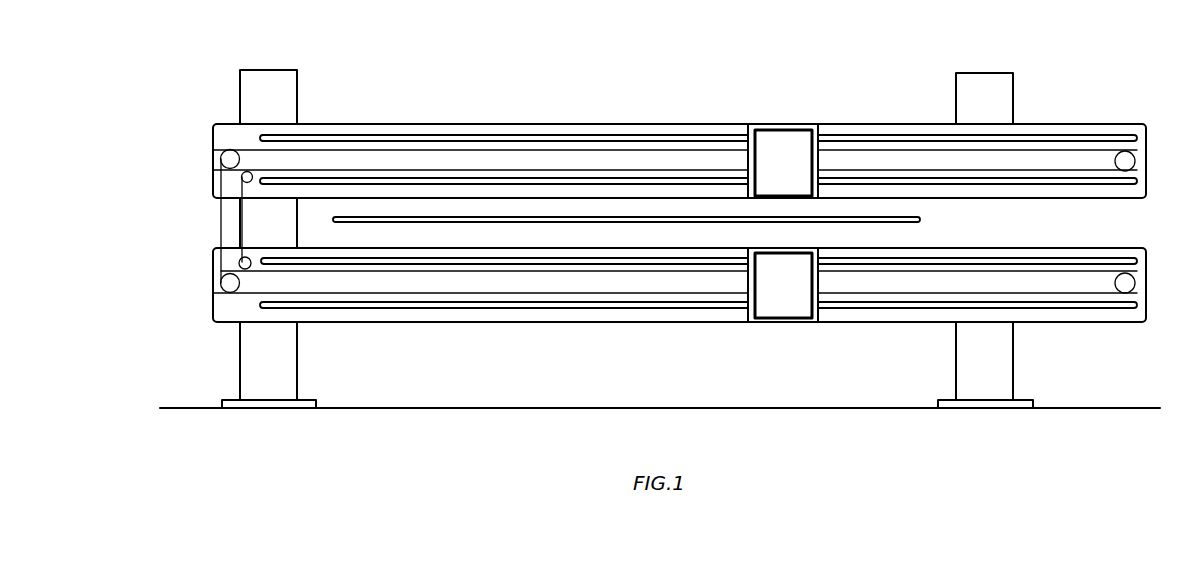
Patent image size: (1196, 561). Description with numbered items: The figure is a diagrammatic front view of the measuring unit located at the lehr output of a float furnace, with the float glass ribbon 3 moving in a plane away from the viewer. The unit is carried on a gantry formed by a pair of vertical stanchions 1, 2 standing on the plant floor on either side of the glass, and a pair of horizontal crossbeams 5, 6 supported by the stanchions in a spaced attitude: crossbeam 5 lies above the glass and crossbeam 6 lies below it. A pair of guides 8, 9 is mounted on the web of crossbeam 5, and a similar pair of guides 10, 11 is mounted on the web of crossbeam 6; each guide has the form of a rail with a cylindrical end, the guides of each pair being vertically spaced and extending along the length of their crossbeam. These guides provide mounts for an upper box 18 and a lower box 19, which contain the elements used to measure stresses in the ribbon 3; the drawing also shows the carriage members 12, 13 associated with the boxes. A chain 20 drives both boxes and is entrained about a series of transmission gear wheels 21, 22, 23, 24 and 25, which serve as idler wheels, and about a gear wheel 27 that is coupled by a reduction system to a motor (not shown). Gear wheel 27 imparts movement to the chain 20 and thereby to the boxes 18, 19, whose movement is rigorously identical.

The stanchion 1 is at (288, 88).
The stanchion 2 is at (968, 88).
The float glass ribbon 3 is at (915, 219).
The crossbeam 5 is at (231, 130).
The crossbeam 6 is at (226, 313).
The guide 8 is at (403, 138).
The guide 9 is at (333, 186).
The guide 10 is at (356, 258).
The guide 11 is at (336, 304).
The upper carriage block 12 is at (752, 130).
The lower carriage block 13 is at (748, 322).
The upper box 18 is at (783, 161).
The lower box 19 is at (783, 285).
The chain 20 is at (614, 148).
The transmission gear wheel 21 is at (1134, 161).
The transmission gear wheel 22 is at (250, 184).
The transmission gear wheel 23 is at (238, 263).
The transmission gear wheel 24 is at (1135, 283).
The transmission gear wheel 25 is at (226, 282).
The gear wheel 27 is at (222, 158).